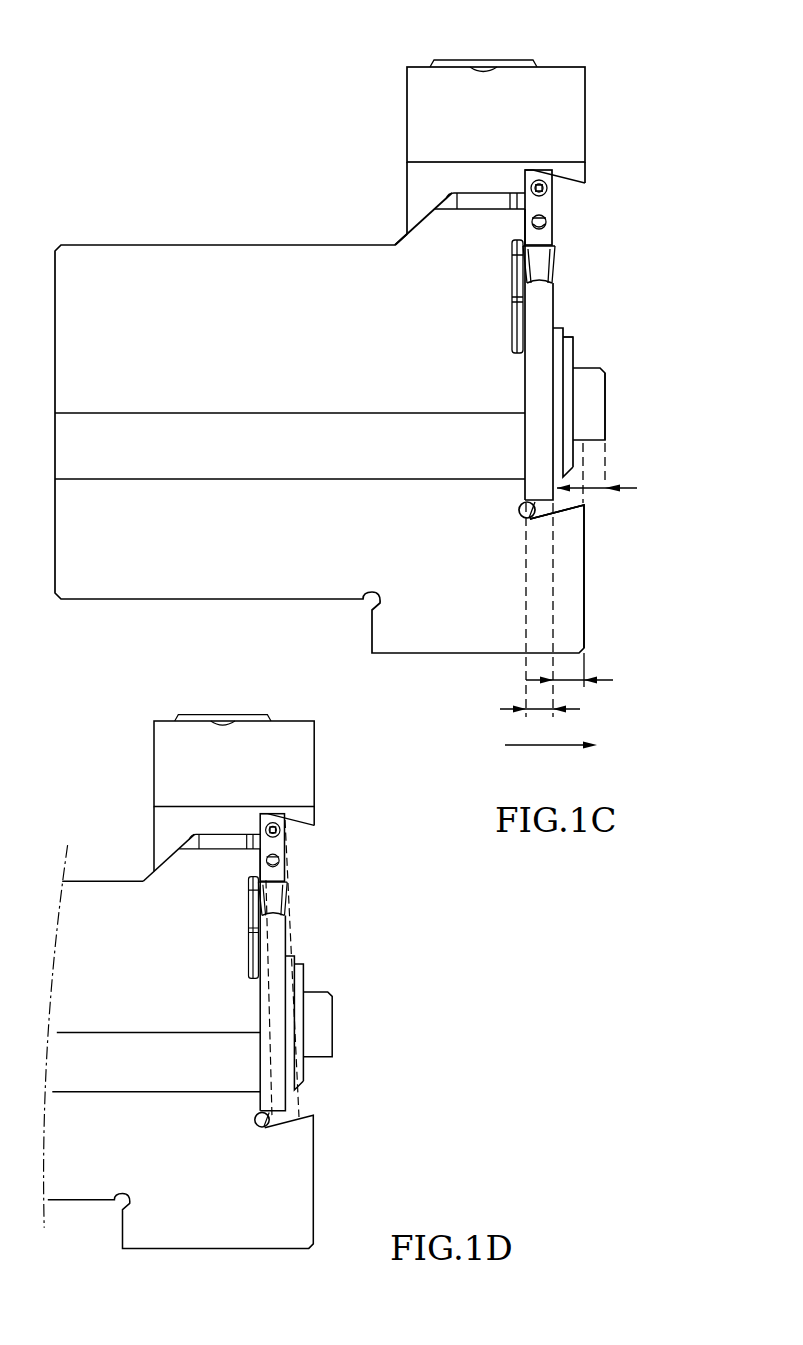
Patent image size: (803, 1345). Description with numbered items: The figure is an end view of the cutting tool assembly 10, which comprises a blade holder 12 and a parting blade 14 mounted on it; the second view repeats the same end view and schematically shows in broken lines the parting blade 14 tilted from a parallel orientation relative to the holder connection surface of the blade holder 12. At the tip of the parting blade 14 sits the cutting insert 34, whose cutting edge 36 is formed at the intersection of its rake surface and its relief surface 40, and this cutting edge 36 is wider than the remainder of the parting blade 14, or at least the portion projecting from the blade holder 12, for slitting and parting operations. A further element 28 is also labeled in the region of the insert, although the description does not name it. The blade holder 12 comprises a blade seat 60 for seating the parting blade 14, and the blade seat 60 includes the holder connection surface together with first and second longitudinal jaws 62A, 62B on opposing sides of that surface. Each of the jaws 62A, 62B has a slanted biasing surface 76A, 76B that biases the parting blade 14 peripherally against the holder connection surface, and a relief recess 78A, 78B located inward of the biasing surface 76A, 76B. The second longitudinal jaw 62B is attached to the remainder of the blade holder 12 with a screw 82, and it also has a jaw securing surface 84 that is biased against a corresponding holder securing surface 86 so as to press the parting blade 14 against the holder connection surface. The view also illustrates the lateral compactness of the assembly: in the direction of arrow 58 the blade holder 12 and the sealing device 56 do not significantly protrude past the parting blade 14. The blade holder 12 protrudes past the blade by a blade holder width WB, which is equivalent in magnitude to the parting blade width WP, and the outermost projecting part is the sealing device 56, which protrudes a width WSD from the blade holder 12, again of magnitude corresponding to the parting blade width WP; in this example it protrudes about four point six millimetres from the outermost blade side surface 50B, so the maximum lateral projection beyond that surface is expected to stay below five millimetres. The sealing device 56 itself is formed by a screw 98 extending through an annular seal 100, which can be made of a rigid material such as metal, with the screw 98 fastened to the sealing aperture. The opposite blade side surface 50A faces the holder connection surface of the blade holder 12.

In FIG. 1C, the cutting tool assembly 10 is at (608, 44).
In FIG. 1C, the blade holder 12 is at (585, 578).
In FIG. 1C, the parting blade 14 is at (570, 313).
In FIG. 1C, the clamping screw 28 is at (547, 217).
In FIG. 1C, the cutting insert 34 is at (548, 272).
In FIG. 1C, the cutting edge 36 is at (557, 248).
In FIG. 1C, the relief surface 40 is at (550, 279).
In FIG. 1C, the blade 50A is at (512, 442).
In FIG. 1D, the blade 50A is at (252, 1004).
In FIG. 1C, the outermost blade side surface 50B is at (520, 504).
In FIG. 1D, the outermost blade side surface 50B is at (306, 938).
In FIG. 1C, the sealing device 56 is at (600, 365).
In FIG. 1C, the arrow 58 is at (551, 733).
In FIG. 1C, the blade seat 60 is at (628, 457).
In FIG. 1C, the first longitudinal jaw 62A is at (585, 590).
In FIG. 1C, the second longitudinal jaw 62B is at (580, 97).
In FIG. 1C, the slanted biasing surface 76A is at (602, 549).
In FIG. 1C, the slanted biasing surface 76B is at (573, 181).
In FIG. 1C, the relief recess 78A is at (520, 518).
In FIG. 1C, the relief recess 78B is at (526, 171).
In FIG. 1C, the screw 82 is at (463, 62).
In FIG. 1C, the jaw securing surface 84 is at (428, 208).
In FIG. 1C, the holder securing surface 86 is at (410, 247).
In FIG. 1C, the screw 98 is at (603, 383).
In FIG. 1C, the annular seal 100 is at (570, 337).
In FIG. 1C, the sealing device protrusion width WSD is at (593, 489).
In FIG. 1C, the blade holder width WB is at (570, 680).
In FIG. 1C, the parting blade width WP is at (536, 708).